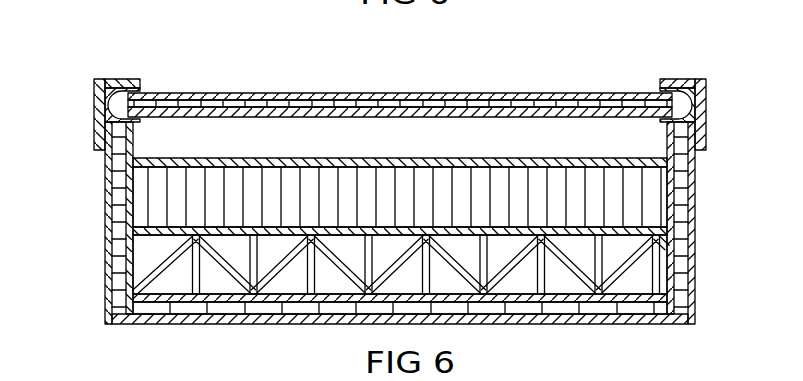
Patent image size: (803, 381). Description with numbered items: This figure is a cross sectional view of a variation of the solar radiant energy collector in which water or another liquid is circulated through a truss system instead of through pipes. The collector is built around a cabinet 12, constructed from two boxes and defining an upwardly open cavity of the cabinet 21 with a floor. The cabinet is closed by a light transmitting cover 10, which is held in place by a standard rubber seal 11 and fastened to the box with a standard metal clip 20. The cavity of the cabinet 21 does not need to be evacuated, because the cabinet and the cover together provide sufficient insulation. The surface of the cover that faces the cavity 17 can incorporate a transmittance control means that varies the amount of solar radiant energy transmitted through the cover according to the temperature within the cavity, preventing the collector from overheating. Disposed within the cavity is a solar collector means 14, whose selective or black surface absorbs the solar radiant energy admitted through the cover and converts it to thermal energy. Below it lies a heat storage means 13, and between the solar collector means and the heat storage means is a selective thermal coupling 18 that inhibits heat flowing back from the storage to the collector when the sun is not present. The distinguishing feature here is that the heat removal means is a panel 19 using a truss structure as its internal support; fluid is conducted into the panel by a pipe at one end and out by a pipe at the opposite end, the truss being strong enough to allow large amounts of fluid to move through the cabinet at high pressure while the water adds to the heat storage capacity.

The light transmitting cover 10 is at (277, 92).
The rubber seal 11 is at (133, 88).
The cabinet 12 is at (105, 203).
The heat storage means 13 is at (48, 6).
The solar collector means 14 is at (377, 158).
The cavity-facing surface of the cover 17 is at (574, 114).
The selective thermal coupling 18 is at (239, 177).
The panel 19 is at (584, 250).
The metal clip 20 is at (703, 115).
The cavity of the cabinet 21 is at (490, 137).